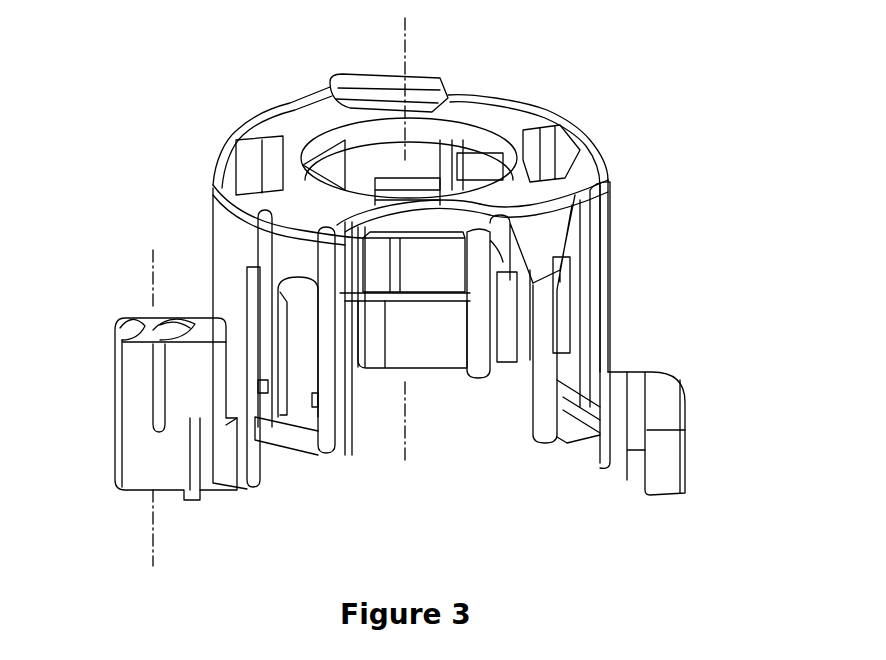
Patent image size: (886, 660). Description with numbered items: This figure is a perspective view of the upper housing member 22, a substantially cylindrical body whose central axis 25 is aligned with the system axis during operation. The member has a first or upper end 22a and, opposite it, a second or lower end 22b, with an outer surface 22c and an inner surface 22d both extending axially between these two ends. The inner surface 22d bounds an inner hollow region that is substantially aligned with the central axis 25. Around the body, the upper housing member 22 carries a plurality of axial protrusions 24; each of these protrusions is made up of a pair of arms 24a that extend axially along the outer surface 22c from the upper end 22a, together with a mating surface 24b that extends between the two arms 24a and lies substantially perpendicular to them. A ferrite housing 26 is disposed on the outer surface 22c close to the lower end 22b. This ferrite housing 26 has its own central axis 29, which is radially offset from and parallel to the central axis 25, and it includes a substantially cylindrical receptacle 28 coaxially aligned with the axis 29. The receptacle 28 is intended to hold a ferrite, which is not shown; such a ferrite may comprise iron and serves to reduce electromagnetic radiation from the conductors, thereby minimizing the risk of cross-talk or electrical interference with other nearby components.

The upper housing member 22 is at (422, 298).
The upper end 22a is at (598, 149).
The lower end 22b is at (672, 503).
The outer surface 22c is at (211, 209).
The inner surface 22d is at (342, 128).
The axial protrusions 24 is at (472, 371).
The arms 24a is at (558, 352).
The mating surface 24b is at (577, 424).
The central axis 25 is at (407, 32).
The ferrite housing 26 is at (428, 150).
The receptacle 28 is at (124, 320).
The central axis of ferrite housing 29 is at (153, 562).